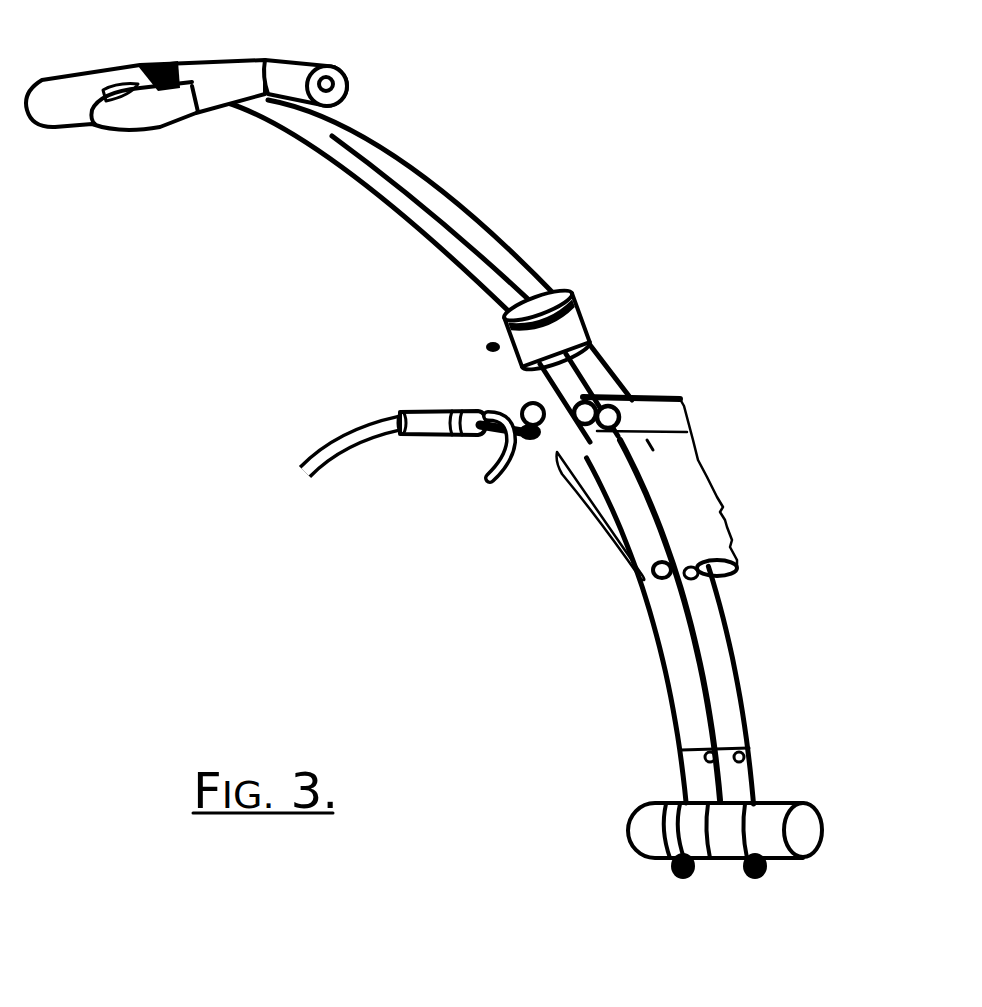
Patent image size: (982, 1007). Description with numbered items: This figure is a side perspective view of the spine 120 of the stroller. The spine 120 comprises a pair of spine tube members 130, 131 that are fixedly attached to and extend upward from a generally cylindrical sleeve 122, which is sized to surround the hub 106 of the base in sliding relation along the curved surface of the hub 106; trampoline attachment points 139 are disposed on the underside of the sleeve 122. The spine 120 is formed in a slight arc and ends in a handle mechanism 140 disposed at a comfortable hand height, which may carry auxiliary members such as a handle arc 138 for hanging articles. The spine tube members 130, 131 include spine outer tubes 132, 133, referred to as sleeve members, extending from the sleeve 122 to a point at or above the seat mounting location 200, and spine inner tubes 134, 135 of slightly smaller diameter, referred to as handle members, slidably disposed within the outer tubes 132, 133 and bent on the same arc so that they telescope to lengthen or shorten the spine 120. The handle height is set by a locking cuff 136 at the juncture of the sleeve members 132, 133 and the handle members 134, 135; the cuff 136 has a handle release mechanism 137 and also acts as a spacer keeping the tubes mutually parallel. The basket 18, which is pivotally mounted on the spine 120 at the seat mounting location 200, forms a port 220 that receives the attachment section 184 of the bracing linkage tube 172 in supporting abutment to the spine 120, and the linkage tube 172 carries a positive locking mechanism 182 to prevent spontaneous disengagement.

The handle mechanism 140 is at (396, 47).
The handle arc 138 is at (163, 130).
The spine inner tube (handle member) 134 is at (493, 232).
The spine inner tube (handle member) 135 is at (433, 238).
The locking cuff 136 is at (567, 340).
The handle release mechanism 137 is at (487, 347).
The spine 120 is at (714, 201).
The port 220 is at (627, 395).
The basket (seat) 18 is at (677, 473).
The bracing linkage tube 172 is at (348, 460).
The attachment section 184 is at (421, 441).
The positive locking mechanism 182 is at (528, 455).
The seat mounting location 200 is at (663, 573).
The spine outer tube (sleeve member) 133 is at (670, 680).
The spine tube member 131 is at (680, 731).
The spine outer tube (sleeve member) 132 is at (732, 652).
The spine tube member 130 is at (741, 693).
The hub 106 is at (806, 830).
The sleeve 122 is at (667, 833).
The trampoline attachment points 139 is at (686, 880).